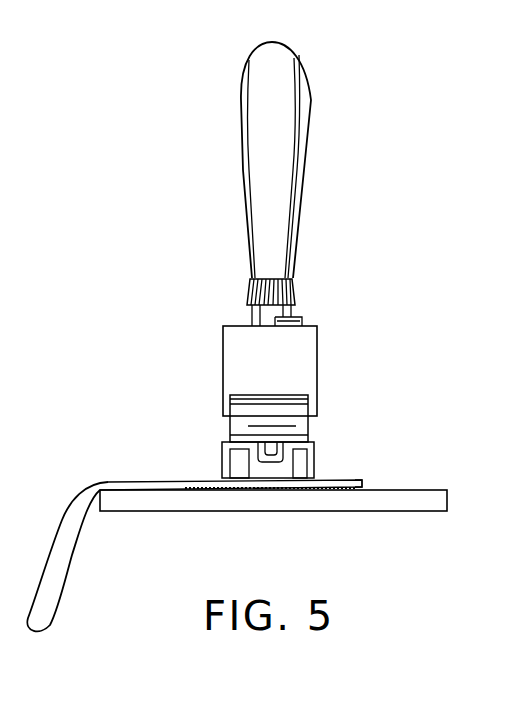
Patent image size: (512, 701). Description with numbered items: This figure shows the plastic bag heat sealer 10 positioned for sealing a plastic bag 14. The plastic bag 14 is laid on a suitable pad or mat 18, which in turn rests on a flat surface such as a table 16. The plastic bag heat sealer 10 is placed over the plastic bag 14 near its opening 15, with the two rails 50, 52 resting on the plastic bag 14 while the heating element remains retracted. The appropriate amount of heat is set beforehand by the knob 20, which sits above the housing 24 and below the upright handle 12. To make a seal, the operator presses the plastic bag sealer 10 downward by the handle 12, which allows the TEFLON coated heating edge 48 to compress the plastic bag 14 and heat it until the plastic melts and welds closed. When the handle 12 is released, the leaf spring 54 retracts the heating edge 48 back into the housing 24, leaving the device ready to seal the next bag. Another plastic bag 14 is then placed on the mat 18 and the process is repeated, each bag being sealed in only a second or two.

The plastic bag heat sealer 10 is at (267, 359).
The handle 12 is at (311, 100).
The plastic bag 14 is at (76, 560).
The opening 15 is at (360, 485).
The table 16 is at (322, 512).
The pad or mat 18 is at (362, 487).
The knob 20 is at (297, 292).
The housing 24 is at (222, 362).
The TEFLON coated heating edge 48 is at (270, 462).
The rail 50 is at (222, 460).
The rail 52 is at (316, 462).
The leaf spring 54 is at (310, 424).